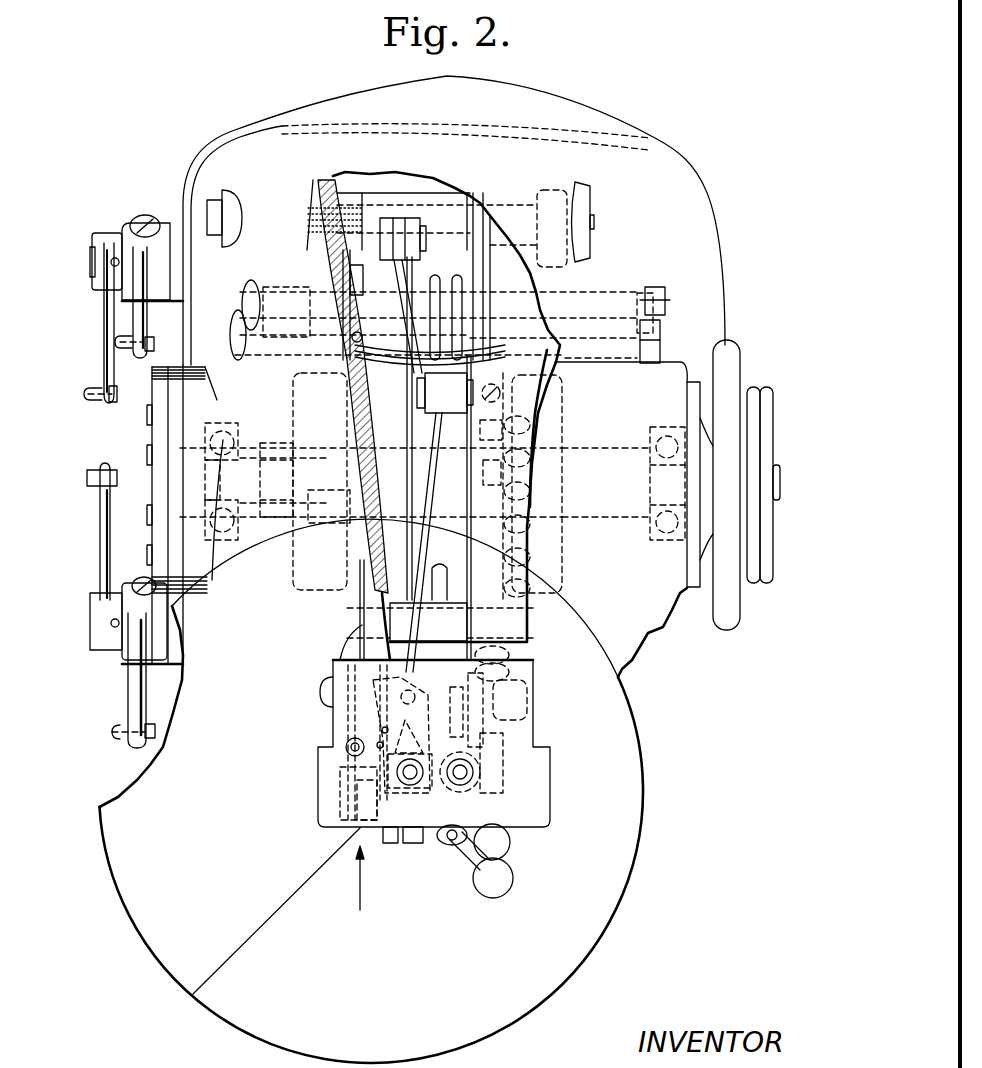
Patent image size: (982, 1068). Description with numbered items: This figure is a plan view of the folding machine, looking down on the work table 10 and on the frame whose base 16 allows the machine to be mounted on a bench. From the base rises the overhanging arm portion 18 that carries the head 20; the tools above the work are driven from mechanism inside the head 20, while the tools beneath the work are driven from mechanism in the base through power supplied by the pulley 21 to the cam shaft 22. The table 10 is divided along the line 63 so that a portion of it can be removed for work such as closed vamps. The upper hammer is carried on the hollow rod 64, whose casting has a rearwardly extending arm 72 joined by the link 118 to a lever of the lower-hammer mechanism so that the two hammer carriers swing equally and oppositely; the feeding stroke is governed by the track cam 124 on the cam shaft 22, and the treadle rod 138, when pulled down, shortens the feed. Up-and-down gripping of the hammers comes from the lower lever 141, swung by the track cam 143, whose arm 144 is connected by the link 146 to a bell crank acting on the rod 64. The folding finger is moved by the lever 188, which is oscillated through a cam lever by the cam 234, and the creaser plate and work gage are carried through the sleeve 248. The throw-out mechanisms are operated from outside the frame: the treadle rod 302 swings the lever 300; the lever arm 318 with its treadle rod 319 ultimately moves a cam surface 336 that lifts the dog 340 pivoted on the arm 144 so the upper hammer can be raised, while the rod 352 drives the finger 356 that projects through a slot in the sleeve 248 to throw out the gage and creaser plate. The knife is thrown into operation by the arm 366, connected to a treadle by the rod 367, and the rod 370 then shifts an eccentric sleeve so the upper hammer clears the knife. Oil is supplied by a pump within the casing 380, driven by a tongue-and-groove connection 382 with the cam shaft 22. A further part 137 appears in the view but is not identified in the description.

The table 10 is at (629, 707).
The base 16 is at (720, 213).
The overhanging arm portion 18 is at (533, 473).
The head 20 is at (340, 757).
The pulley 21 is at (745, 372).
The cam shaft 22 is at (570, 519).
The line 63 is at (282, 912).
The hollow rod 64 is at (410, 786).
The rearwardly extending arm 72 is at (440, 602).
The link 118 is at (457, 303).
The track cam 124 is at (562, 381).
The rod 137 is at (107, 516).
The treadle rod 138 is at (88, 477).
The lower lever 141 is at (357, 593).
The track cam 143 is at (296, 593).
The arm 144 is at (390, 270).
The link 146 is at (412, 380).
The lever 188 is at (380, 663).
The cam 234 is at (556, 566).
The sleeve 248 is at (458, 786).
The lever 300 is at (112, 365).
The treadle rod 302 is at (110, 400).
The treadle-actuated lever arm 318 is at (137, 320).
The treadle rod 319 is at (120, 357).
The cam surface 336 is at (343, 270).
The dog 340 is at (360, 312).
The rod 352 is at (487, 247).
The curved finger-like end 356 is at (483, 737).
The arm 366 is at (133, 683).
The rod 367 is at (112, 740).
The rod 370 is at (417, 303).
The casing 380 is at (180, 550).
The tongue-and-groove connection 382 is at (205, 490).